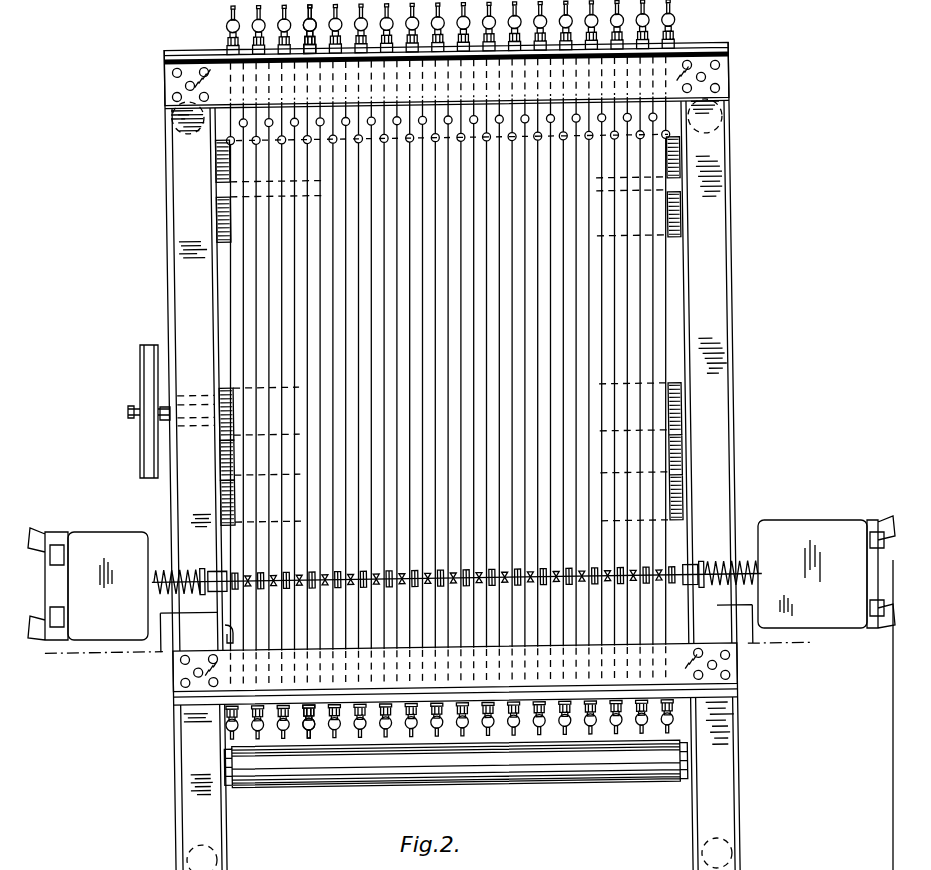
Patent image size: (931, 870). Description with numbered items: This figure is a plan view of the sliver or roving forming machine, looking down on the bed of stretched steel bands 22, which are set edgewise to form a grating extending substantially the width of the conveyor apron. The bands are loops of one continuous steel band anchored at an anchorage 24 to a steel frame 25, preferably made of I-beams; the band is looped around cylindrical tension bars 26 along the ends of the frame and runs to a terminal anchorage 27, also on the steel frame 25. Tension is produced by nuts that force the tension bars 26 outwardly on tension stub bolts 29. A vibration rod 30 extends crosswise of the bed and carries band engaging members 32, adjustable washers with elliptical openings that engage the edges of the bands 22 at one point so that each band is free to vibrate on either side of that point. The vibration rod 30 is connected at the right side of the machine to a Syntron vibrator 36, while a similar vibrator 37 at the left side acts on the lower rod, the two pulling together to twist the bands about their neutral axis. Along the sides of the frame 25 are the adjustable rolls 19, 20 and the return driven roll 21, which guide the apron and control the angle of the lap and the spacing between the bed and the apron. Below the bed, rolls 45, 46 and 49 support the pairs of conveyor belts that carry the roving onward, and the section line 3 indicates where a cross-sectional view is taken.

The section line 3 is at (50, 653).
The adjustable roll 19 is at (220, 172).
The adjustable roll 20 is at (218, 208).
The return driven roll 21 is at (228, 388).
The stretched steel bands 22 is at (258, 307).
The anchorage 24 is at (225, 628).
The steel frame 25 is at (183, 289).
The tension bars 26 is at (229, 25).
The terminal anchorage 27 is at (688, 135).
The tension stub bolts 29 is at (298, 751).
The vibration rod 30 is at (665, 588).
The band engaging members 32 is at (238, 572).
The Syntron vibrator 36 is at (826, 572).
The Syntron vibrator 37 is at (88, 584).
The roll 45 is at (222, 493).
The roll 46 is at (346, 787).
The roll 49 is at (222, 468).